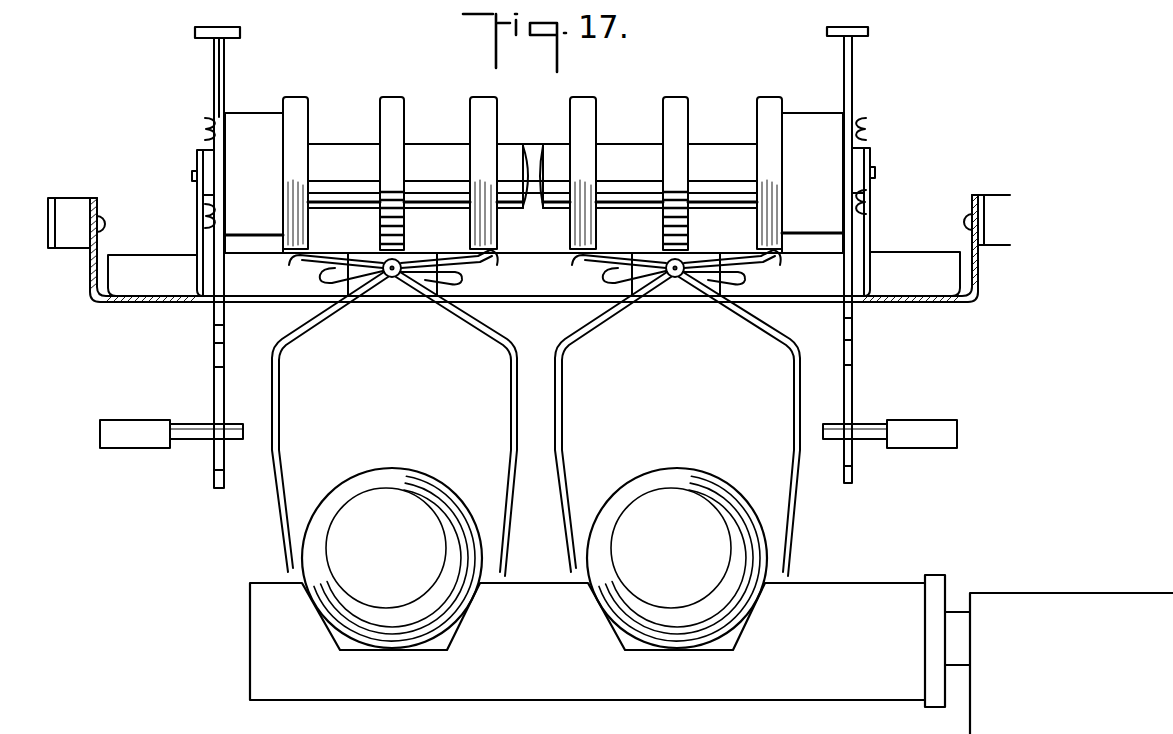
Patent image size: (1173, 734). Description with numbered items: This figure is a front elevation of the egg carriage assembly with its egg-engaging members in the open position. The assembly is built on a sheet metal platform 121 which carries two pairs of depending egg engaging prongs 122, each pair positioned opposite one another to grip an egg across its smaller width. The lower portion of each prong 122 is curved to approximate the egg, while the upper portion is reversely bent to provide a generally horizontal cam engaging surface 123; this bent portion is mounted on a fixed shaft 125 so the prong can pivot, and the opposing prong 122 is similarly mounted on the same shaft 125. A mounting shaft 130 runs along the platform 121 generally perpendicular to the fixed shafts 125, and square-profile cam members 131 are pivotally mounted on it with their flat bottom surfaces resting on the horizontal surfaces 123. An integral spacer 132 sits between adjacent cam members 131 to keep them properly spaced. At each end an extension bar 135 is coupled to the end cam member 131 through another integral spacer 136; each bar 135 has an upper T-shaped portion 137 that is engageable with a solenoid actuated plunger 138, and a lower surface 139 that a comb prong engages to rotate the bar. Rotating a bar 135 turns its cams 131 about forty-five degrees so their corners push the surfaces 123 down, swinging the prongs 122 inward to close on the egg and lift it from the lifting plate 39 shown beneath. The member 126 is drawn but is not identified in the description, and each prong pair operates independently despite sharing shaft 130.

The lifting plate 39 is at (868, 650).
The sheet metal platform 121 is at (940, 302).
The egg engaging prongs 122 is at (280, 445).
The horizontal cam engaging surface 123 is at (300, 256).
The fixed shaft 125 is at (392, 280).
The spring 126 is at (742, 305).
The mounting shaft 130 is at (858, 147).
The cam members 131 is at (306, 100).
The integral spacer 132 is at (399, 97).
The extension bar 135 is at (214, 62).
The integral spacer 136 is at (258, 113).
The T-shaped portion 137 is at (242, 33).
The solenoid actuated plunger 138 is at (143, 420).
The lower surface 139 is at (216, 470).